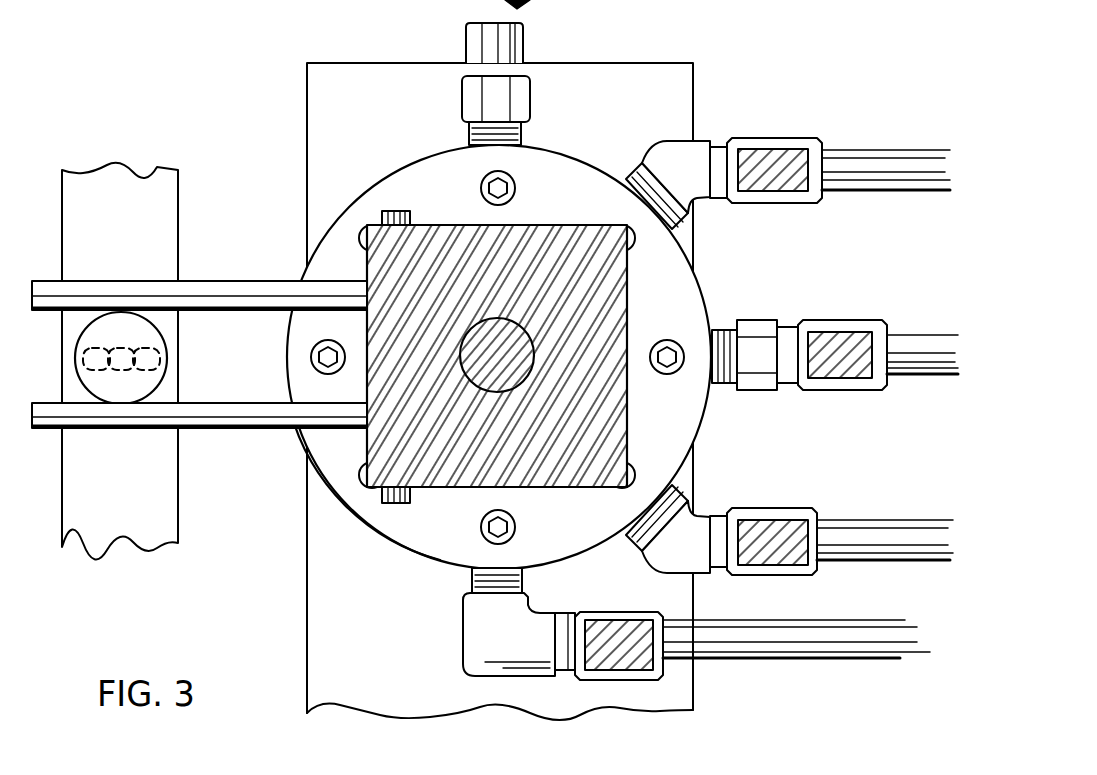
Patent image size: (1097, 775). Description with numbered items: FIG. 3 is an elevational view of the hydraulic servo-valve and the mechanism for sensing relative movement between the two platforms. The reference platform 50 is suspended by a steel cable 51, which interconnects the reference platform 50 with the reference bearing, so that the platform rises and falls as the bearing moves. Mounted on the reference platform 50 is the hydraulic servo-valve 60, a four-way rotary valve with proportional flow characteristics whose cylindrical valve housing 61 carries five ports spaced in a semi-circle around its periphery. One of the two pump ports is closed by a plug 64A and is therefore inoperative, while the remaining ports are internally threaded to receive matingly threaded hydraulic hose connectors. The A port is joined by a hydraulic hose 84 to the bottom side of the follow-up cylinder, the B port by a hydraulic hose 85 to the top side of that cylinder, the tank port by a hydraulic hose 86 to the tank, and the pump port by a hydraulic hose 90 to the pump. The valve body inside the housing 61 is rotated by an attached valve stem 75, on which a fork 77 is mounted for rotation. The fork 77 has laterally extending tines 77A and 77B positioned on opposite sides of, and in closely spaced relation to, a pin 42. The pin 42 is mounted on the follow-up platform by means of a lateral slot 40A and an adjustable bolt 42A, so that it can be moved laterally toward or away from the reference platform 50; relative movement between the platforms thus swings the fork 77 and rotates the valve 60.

The lateral slot 40A is at (90, 352).
The pin 42 is at (150, 334).
The adjustable bolt 42A is at (126, 384).
The reference platform 50 is at (672, 63).
The steel cable 51 is at (466, 44).
The hydraulic servo-valve 60 is at (399, 170).
The valve housing 61 is at (673, 306).
The plug 64A is at (530, 99).
The valve stem 75 is at (476, 382).
The fork 77 is at (413, 540).
The tine 77A is at (212, 281).
The tine 77B is at (216, 430).
The hydraulic hose 84 is at (848, 566).
The hydraulic hose 85 is at (879, 155).
The hydraulic hose 86 is at (922, 338).
The hydraulic hose 90 is at (790, 663).